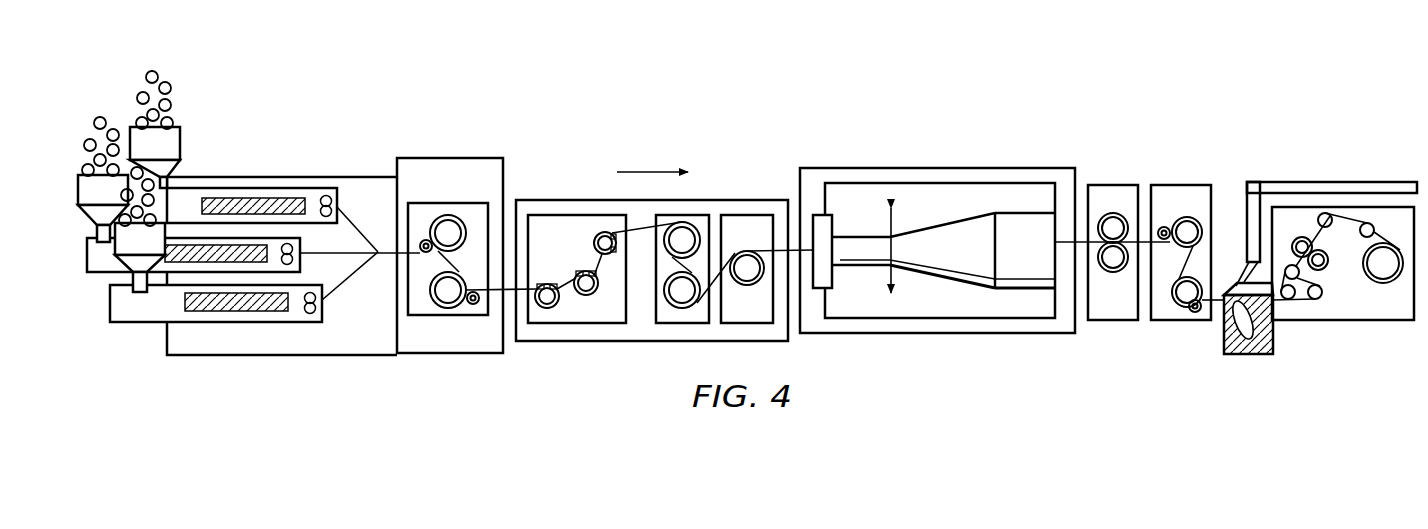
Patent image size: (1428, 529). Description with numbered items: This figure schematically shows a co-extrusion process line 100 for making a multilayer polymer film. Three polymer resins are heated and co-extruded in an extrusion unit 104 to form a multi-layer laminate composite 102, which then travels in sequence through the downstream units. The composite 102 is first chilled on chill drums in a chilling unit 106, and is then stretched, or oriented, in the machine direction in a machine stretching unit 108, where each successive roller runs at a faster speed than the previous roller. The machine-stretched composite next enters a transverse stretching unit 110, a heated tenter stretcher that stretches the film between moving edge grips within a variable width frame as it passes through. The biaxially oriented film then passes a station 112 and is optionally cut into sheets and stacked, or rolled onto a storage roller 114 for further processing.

The system for manufacturing multilayer sheet 100 is at (868, 97).
The multi-layer laminate composite 102 is at (388, 250).
The extrusion unit 104 is at (282, 175).
The chilling unit 106 is at (450, 156).
The machine stretching unit 108 is at (635, 344).
The transverse stretching unit 110 is at (964, 167).
The slitter 112 is at (1250, 358).
The storage roller 114 is at (1353, 325).